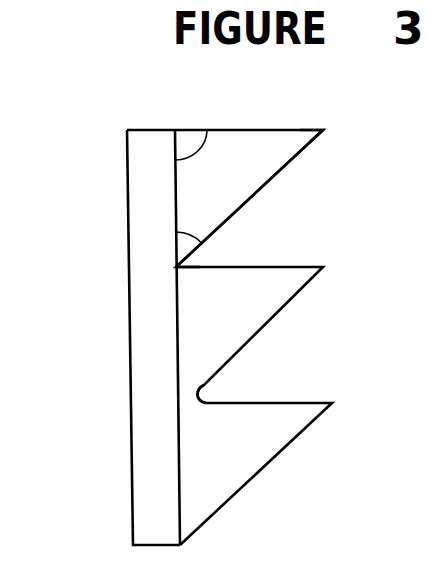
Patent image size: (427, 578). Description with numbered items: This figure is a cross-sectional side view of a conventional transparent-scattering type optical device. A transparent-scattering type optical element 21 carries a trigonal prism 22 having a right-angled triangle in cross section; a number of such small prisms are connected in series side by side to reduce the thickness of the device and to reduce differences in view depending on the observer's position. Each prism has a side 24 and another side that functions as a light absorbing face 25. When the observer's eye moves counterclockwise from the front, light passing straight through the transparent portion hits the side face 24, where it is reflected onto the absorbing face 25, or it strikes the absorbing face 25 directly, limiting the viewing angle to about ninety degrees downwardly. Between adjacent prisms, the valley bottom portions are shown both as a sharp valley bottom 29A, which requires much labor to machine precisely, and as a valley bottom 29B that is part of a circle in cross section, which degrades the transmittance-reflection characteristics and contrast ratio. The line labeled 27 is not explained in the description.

The transparent-scattering type optical element 21 is at (133, 492).
The trigonal prism 22 is at (282, 100).
The side of the triangle 24 is at (280, 170).
The light absorbing face 25 is at (298, 128).
The interface line 27 is at (173, 184).
The sharp valley bottom portion 29A is at (176, 267).
The circular valley bottom portion 29B is at (193, 398).